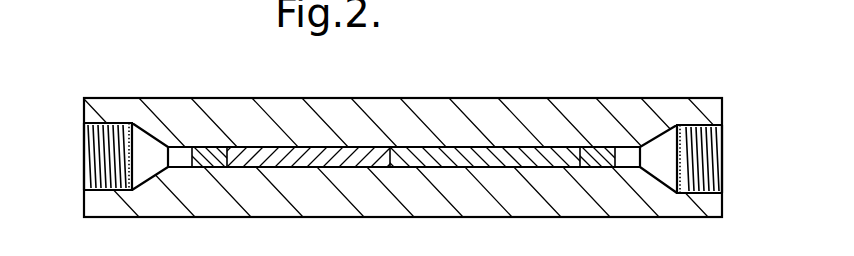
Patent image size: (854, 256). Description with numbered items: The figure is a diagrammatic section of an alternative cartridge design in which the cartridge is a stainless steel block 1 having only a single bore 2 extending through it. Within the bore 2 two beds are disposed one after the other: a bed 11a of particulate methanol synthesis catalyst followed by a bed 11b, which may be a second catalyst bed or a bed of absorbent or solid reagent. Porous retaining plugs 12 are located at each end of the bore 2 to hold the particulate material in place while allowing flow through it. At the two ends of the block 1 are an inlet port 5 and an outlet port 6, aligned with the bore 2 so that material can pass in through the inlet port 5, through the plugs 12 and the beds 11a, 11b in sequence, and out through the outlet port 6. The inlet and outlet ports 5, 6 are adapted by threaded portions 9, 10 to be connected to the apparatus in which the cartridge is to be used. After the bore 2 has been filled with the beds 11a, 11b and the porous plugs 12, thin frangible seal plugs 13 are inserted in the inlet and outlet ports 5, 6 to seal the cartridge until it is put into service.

The block 1 is at (450, 112).
The bore 2 is at (253, 168).
The inlet port 5 is at (87, 141).
The outlet port 6 is at (718, 143).
The threaded portion 9 is at (110, 123).
The threaded portion 10 is at (692, 125).
The catalyst bed 11a is at (363, 168).
The bed 11b is at (525, 168).
The porous retaining plug 12 is at (213, 147).
The frangible seal plug 13 is at (125, 161).